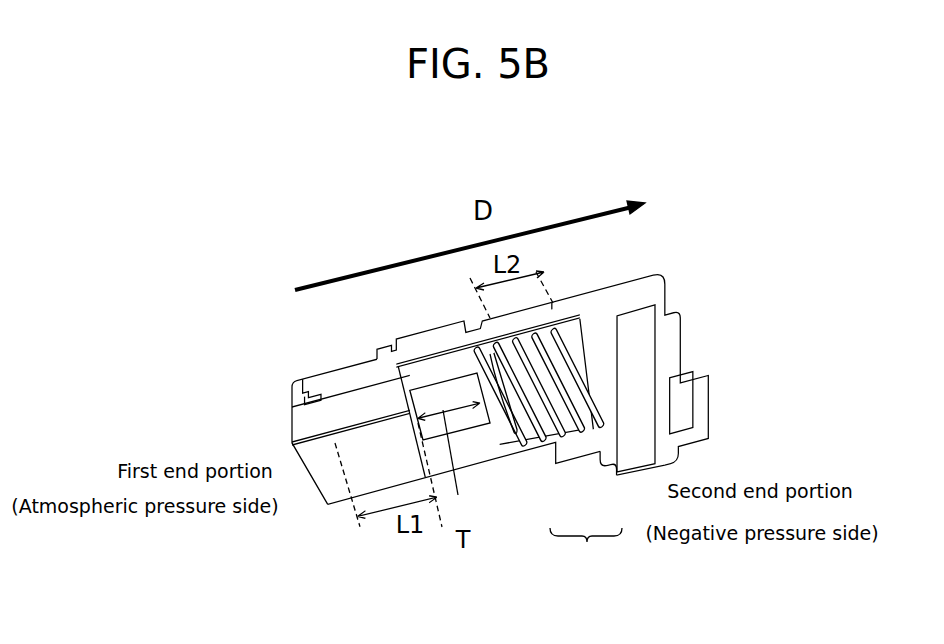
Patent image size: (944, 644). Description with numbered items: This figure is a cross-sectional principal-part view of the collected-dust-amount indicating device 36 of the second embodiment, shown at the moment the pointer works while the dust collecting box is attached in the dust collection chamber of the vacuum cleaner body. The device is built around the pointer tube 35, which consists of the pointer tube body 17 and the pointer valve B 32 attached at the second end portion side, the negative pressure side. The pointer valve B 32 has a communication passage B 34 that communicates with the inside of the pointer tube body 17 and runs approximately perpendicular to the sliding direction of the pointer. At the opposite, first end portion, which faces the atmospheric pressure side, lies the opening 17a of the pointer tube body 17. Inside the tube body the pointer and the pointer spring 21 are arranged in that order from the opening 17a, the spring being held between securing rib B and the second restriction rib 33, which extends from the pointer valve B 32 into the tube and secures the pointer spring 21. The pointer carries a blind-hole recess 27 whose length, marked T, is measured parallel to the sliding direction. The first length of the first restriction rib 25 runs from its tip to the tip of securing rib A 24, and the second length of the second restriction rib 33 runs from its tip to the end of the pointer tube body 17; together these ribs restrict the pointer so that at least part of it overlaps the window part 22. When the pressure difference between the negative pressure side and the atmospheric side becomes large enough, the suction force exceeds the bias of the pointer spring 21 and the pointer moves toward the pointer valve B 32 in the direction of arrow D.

The pointer tube body 17 is at (543, 447).
The opening 17a is at (312, 425).
The pointer spring 21 is at (575, 367).
The window part 22 is at (437, 332).
The securing rib A 24 is at (307, 390).
The first restriction rib 25 is at (353, 428).
The recess 27 is at (437, 397).
The pointer valve B 32 is at (577, 450).
The second restriction rib 33 is at (527, 417).
The communication passage B 34 is at (641, 367).
The pointer tube 35 is at (572, 570).
The collected-dust-amount indicating device 36 is at (811, 590).